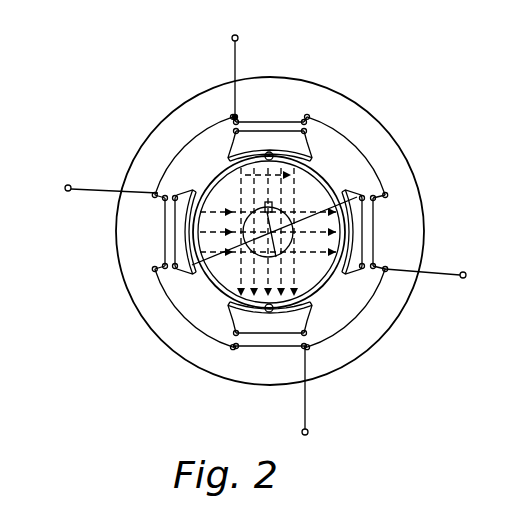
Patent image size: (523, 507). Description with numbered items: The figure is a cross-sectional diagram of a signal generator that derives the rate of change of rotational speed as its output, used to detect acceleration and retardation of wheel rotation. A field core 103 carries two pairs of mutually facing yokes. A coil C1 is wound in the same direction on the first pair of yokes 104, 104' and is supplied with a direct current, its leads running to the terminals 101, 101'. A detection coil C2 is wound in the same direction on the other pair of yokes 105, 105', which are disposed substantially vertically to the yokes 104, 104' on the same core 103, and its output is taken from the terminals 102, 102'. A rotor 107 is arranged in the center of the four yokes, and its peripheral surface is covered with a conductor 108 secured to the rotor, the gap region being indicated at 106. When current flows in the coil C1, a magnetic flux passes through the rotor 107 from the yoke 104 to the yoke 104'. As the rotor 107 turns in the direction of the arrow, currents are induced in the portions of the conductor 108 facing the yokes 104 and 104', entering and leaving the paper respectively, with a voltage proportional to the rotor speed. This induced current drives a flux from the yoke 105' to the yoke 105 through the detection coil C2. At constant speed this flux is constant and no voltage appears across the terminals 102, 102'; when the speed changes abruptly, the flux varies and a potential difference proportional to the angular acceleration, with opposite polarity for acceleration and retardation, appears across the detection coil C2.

The terminal lead 101 is at (319, 401).
The terminal lead 101' is at (229, 68).
The terminal 102 is at (443, 279).
The terminal 102' is at (91, 190).
The field core 103 is at (393, 133).
The yoke 104 is at (270, 104).
The yoke 104' is at (270, 346).
The yoke 105 is at (134, 207).
The yoke 105' is at (377, 232).
The rotor 106 is at (228, 283).
The rotor 107 is at (228, 147).
The conductor 108 is at (335, 287).
The coil C1 is at (238, 58).
The detection coil C2 is at (89, 190).